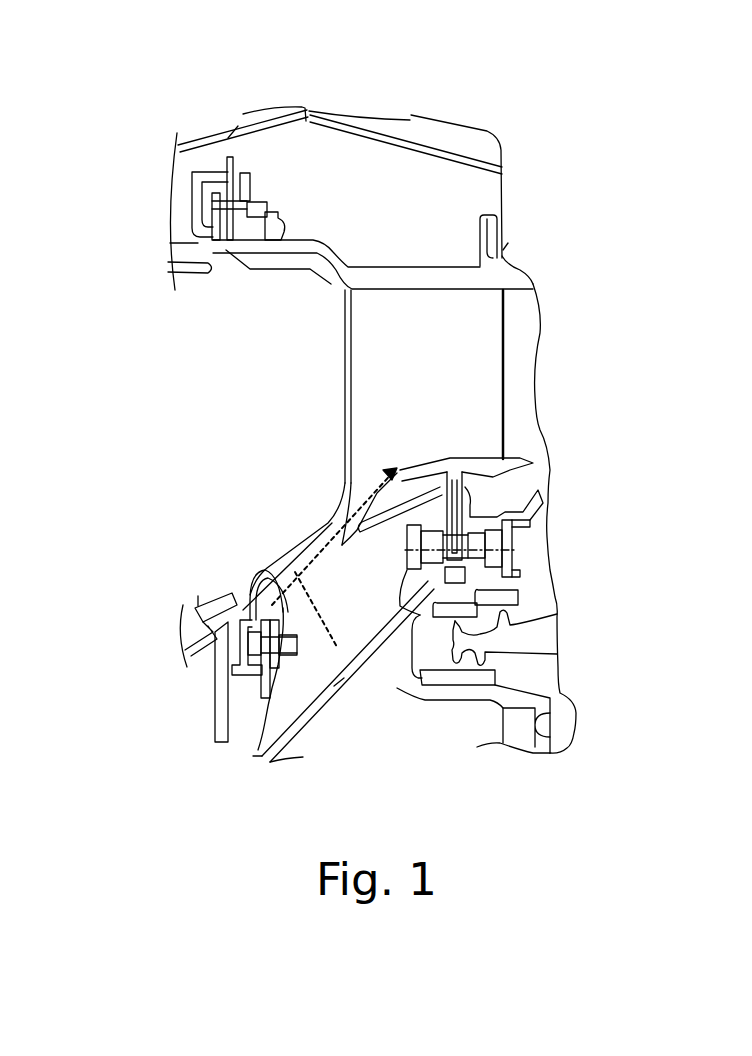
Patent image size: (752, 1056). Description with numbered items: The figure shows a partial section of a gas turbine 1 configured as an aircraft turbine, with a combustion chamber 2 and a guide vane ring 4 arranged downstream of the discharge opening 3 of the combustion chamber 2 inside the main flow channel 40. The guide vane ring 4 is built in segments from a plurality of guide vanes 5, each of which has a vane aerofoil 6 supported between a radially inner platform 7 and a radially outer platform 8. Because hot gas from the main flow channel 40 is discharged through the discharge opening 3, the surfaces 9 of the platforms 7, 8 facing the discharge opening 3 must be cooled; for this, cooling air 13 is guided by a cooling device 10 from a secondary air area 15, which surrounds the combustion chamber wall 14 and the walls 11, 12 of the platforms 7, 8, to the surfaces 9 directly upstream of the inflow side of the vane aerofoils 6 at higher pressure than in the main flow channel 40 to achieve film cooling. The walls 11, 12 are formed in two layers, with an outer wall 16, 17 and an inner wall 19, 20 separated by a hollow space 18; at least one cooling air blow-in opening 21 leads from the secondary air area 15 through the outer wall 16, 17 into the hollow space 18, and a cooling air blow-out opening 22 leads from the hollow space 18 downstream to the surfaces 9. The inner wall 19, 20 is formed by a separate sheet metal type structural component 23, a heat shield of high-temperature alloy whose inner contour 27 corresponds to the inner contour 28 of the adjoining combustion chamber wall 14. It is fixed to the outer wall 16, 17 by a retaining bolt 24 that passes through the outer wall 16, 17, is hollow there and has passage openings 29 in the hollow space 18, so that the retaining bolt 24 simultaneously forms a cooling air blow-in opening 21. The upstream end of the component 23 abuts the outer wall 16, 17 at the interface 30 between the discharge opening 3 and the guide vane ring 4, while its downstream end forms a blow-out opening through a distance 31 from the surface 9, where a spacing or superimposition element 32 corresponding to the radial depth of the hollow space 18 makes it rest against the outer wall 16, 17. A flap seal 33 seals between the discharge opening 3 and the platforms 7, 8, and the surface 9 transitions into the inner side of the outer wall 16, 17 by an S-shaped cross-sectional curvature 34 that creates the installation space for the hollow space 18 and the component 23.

The gas turbine 1 is at (484, 112).
The combustion chamber 2 is at (213, 438).
The discharge opening 3 is at (227, 600).
The guide vane ring 4 is at (506, 340).
The guide vane 5 is at (503, 313).
The vane aerofoil 6 is at (480, 378).
The radially inner platform 7 is at (400, 493).
The radially outer platform 8 is at (331, 253).
The surface of the platforms 9 is at (332, 286).
The cooling device 10 is at (250, 532).
The wall of the inner platform 11 is at (337, 580).
The wall of the outer platform 12 is at (305, 237).
The cooling air 13 is at (380, 465).
The combustion chamber wall 14 is at (188, 648).
The secondary air area 15 is at (307, 702).
The outer wall 16 is at (257, 760).
The outer wall 17 is at (247, 248).
The hollow space 18 is at (273, 577).
The inner wall 19 is at (260, 575).
The inner wall 20 is at (250, 275).
The cooling air blow-in opening 21 is at (283, 605).
The cooling air blow-out opening 22 is at (313, 522).
The sheet metal type structural component 23 is at (307, 540).
The retaining bolt 24 is at (342, 545).
The inner contour of the inner wall 27 is at (230, 578).
The inner contour of the combustion chamber wall 28 is at (196, 604).
The passage openings 29 is at (325, 575).
The interface 30 is at (222, 262).
The distance 31 is at (335, 513).
The spacing or superimposition element 32 is at (317, 525).
The flap seal 33 is at (229, 170).
The S-shaped cross-sectional curvature 34 is at (350, 528).
The main flow channel 40 is at (175, 361).